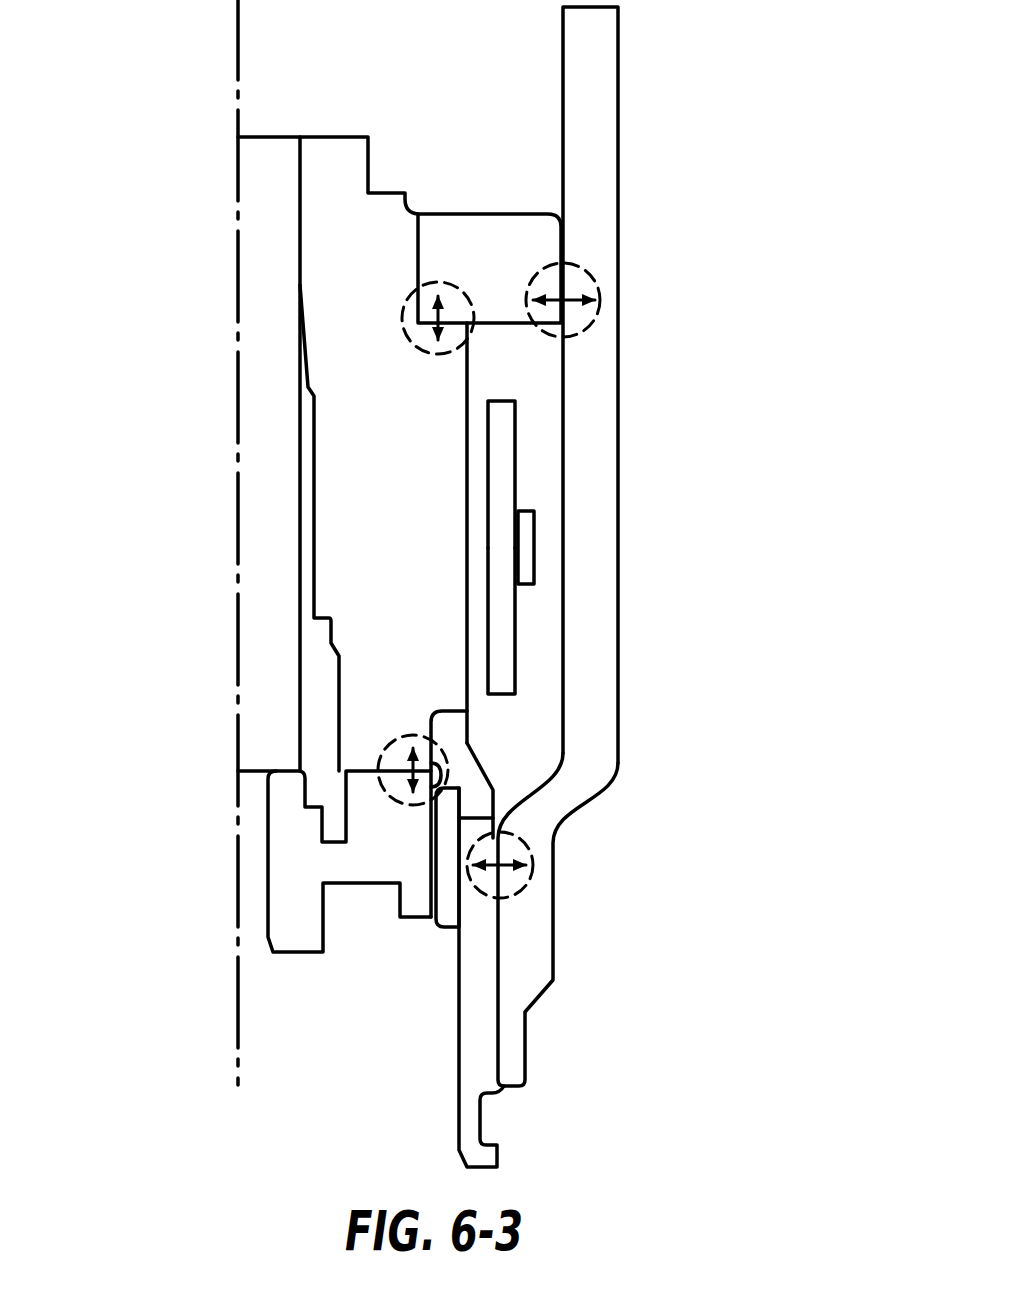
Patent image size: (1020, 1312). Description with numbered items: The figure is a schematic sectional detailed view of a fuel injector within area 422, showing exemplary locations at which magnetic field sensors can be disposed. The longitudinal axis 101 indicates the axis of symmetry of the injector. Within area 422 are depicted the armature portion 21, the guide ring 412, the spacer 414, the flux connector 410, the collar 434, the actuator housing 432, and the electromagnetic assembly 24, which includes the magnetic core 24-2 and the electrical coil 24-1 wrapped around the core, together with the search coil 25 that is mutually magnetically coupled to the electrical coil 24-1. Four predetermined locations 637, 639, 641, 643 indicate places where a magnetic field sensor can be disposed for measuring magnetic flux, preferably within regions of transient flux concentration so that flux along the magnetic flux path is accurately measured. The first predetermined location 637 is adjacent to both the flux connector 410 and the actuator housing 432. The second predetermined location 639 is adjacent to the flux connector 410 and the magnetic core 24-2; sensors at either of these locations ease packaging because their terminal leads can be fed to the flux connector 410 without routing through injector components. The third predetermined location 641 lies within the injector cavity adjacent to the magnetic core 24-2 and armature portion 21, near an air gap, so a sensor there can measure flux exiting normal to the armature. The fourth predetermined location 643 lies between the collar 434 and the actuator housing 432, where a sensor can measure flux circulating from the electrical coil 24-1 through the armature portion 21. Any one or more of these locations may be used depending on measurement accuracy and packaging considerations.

The longitudinal axis 101 is at (238, 68).
The armature portion 21 is at (293, 873).
The electromagnetic assembly 24 is at (616, 547).
The electrical coil 24-1 is at (519, 452).
The magnetic core 24-2 is at (414, 640).
The search coil 25 is at (537, 549).
The flux connector 410 is at (485, 235).
The guide ring 412 is at (440, 858).
The spacer 414 is at (462, 765).
The area 422 is at (648, 587).
The actuator housing 432 is at (598, 260).
The collar 434 is at (475, 1036).
The first predetermined location 637 is at (600, 297).
The second predetermined location 639 is at (404, 330).
The third predetermined location 641 is at (378, 757).
The fourth predetermined location 643 is at (532, 873).